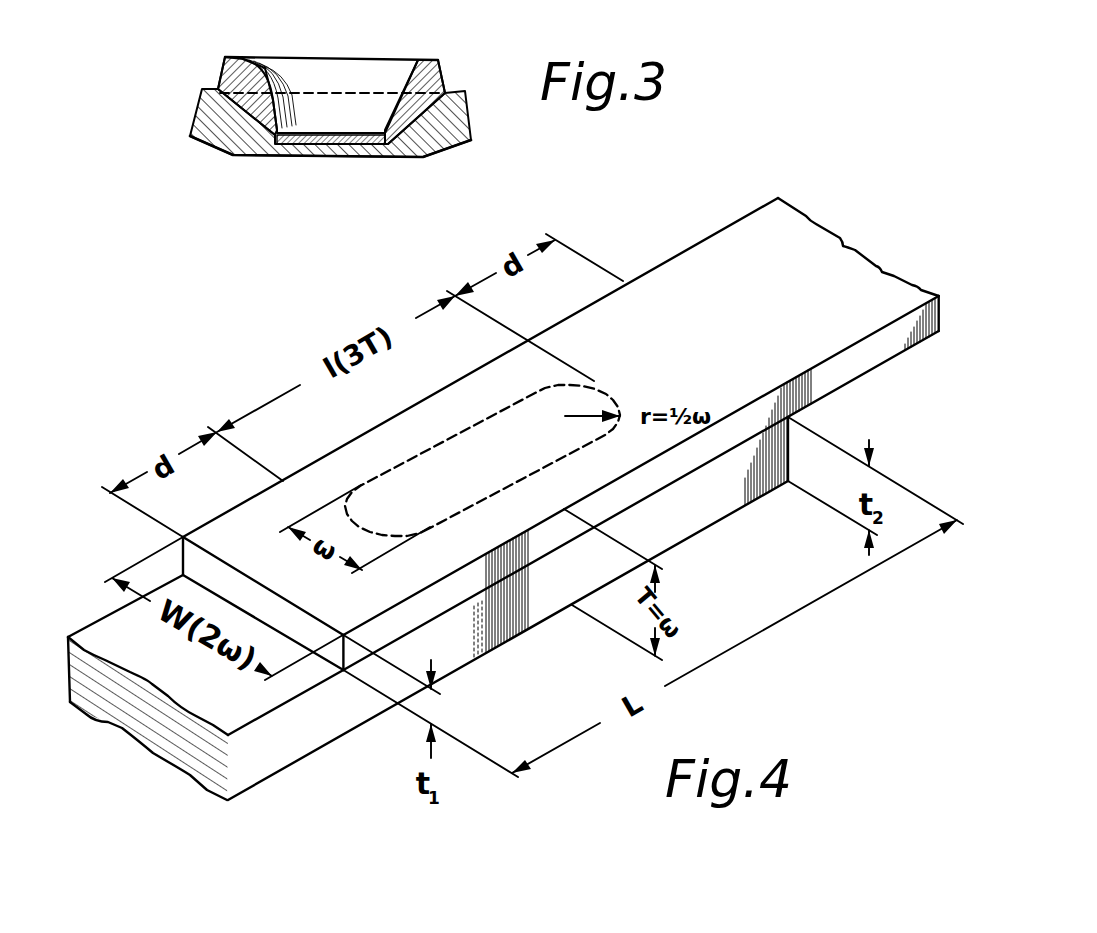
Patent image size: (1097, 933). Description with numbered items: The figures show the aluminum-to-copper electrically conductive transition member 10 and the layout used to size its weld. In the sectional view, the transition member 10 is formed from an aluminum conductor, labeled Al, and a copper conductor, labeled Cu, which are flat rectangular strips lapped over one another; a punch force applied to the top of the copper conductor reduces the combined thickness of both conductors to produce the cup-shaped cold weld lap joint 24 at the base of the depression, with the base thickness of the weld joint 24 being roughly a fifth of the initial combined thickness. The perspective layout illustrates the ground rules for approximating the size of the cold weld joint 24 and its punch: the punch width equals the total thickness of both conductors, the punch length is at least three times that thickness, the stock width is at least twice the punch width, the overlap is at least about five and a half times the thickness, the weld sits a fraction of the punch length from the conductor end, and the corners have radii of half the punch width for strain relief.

The aluminum-to-copper electrically conductive transition member 10 is at (330, 129).
The cold weld lap joint 24 is at (312, 147).
The copper dish Cu is at (228, 80).
The aluminum body Al is at (204, 110).